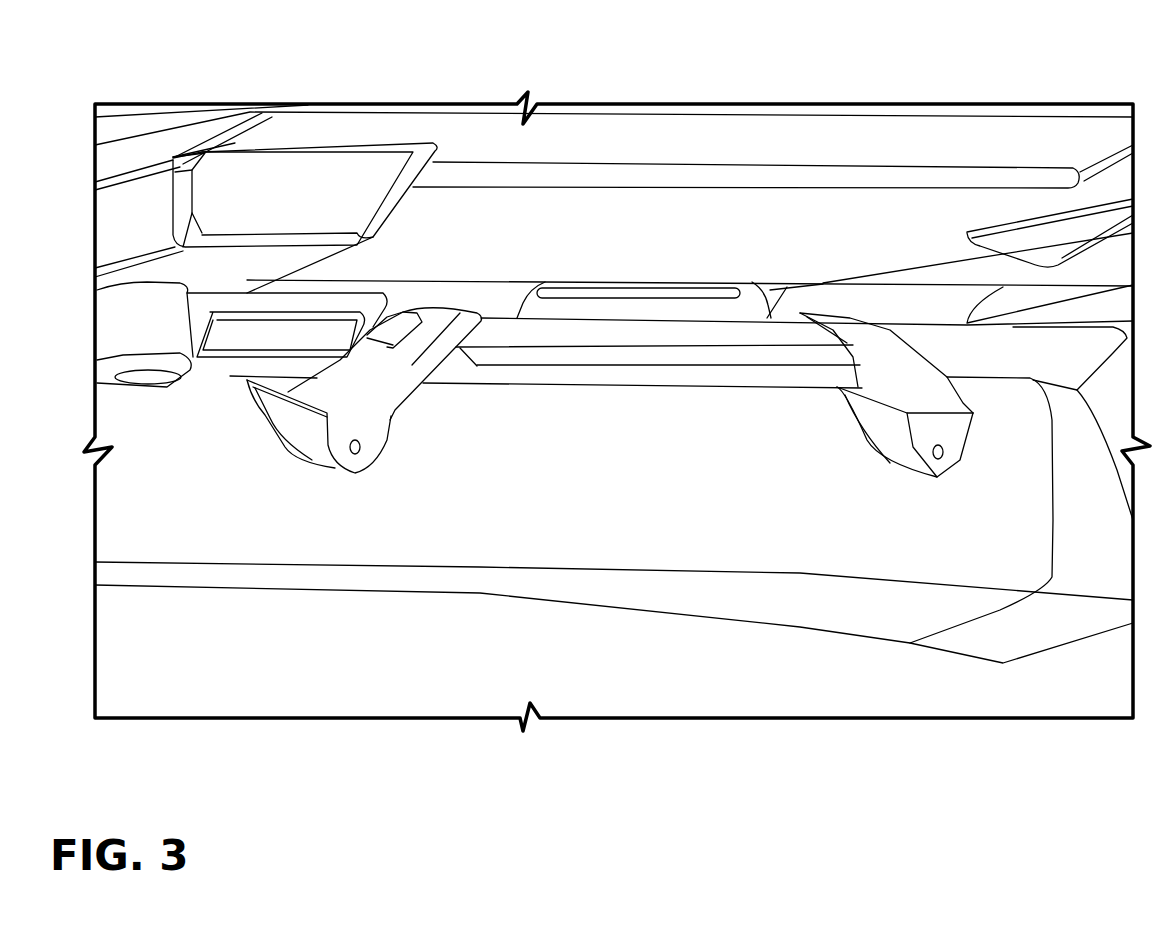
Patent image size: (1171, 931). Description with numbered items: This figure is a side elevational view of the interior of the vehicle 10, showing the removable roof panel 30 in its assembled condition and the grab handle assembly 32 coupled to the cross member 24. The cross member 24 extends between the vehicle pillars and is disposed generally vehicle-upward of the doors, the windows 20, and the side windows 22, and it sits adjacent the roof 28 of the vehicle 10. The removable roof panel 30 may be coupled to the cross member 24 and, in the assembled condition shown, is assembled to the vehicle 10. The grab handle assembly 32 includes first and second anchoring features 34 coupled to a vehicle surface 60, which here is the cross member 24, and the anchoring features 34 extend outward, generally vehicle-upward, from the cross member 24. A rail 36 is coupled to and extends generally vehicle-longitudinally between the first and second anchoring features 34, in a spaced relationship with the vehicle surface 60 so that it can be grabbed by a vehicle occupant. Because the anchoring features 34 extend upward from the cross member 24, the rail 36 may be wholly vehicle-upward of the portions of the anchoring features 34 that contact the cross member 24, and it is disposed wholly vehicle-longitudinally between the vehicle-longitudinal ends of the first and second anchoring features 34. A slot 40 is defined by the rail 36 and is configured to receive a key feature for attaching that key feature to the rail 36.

The vehicle 10 is at (264, 90).
The window 20 is at (498, 663).
The side window 22 is at (425, 653).
The cross member 24 is at (606, 528).
The roof 28 is at (1007, 143).
The removable roof panel 30 is at (413, 212).
The grab handle assembly 32 is at (588, 300).
The anchoring feature 34 is at (413, 367).
The rail 36 is at (708, 333).
The slot 40 is at (637, 342).
The vehicle surface 60 is at (738, 523).